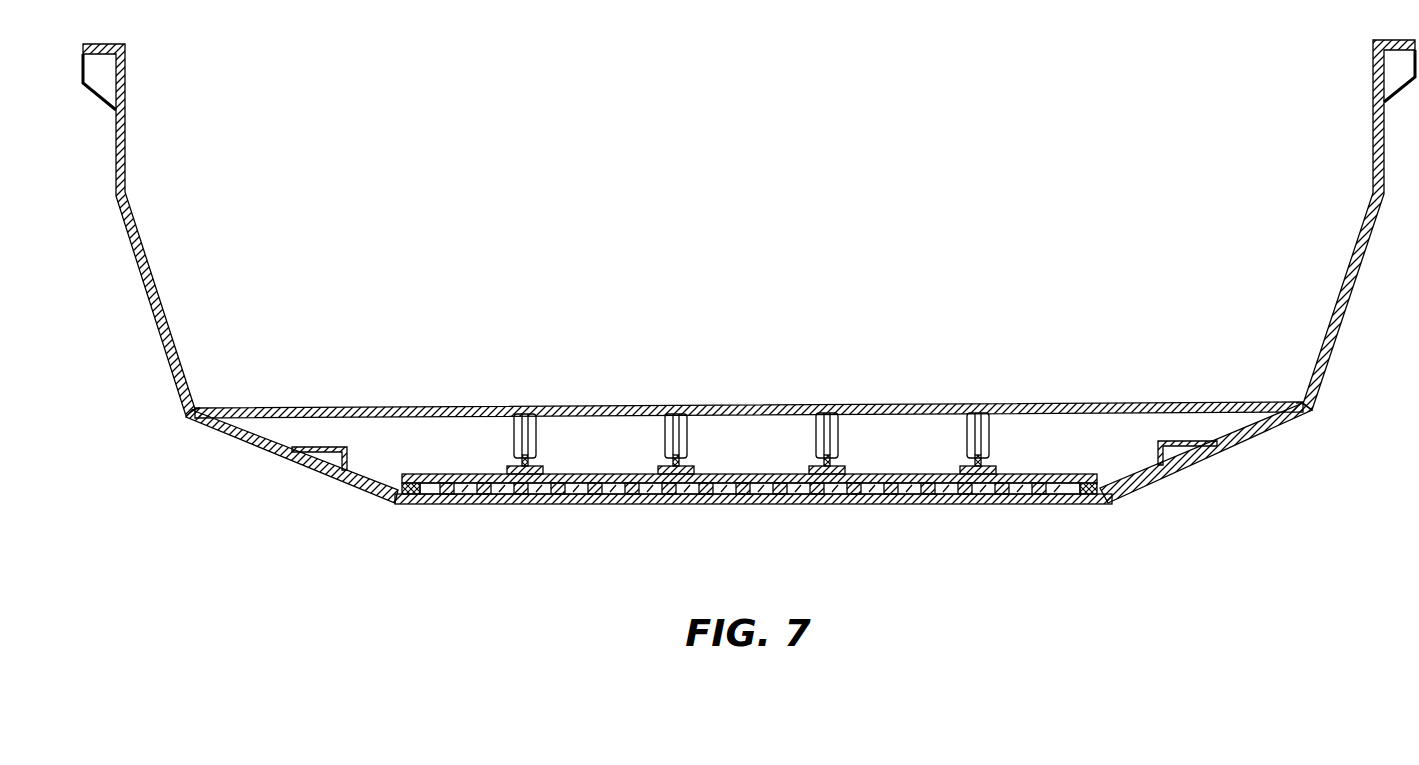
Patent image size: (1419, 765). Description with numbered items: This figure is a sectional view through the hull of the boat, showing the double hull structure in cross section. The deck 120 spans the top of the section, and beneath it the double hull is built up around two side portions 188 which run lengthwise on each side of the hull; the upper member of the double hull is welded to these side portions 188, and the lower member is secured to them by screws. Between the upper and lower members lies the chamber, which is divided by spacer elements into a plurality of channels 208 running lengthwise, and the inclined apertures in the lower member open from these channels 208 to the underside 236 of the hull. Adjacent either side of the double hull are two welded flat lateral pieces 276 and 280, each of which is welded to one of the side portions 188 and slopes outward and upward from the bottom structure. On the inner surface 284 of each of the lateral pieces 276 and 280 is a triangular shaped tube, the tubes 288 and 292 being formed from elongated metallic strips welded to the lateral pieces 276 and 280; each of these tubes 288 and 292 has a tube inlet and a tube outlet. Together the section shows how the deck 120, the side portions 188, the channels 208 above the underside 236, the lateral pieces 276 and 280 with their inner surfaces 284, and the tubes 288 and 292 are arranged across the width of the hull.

The deck 120 is at (875, 402).
The side portions 188 is at (422, 505).
The channels 208 is at (580, 488).
The underside of the hull 236 is at (783, 503).
The lateral piece 276 is at (1231, 443).
The lateral piece 280 is at (239, 440).
The inner surface 284 is at (255, 437).
The triangular shaped tube 288 is at (327, 447).
The triangular shaped tube 292 is at (1157, 455).